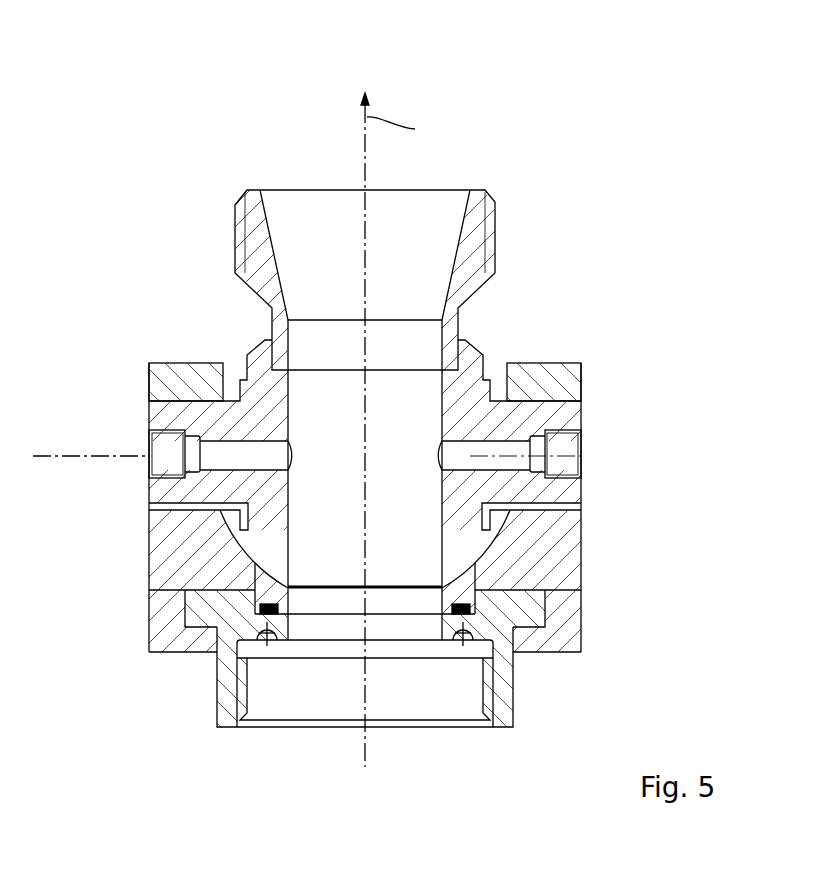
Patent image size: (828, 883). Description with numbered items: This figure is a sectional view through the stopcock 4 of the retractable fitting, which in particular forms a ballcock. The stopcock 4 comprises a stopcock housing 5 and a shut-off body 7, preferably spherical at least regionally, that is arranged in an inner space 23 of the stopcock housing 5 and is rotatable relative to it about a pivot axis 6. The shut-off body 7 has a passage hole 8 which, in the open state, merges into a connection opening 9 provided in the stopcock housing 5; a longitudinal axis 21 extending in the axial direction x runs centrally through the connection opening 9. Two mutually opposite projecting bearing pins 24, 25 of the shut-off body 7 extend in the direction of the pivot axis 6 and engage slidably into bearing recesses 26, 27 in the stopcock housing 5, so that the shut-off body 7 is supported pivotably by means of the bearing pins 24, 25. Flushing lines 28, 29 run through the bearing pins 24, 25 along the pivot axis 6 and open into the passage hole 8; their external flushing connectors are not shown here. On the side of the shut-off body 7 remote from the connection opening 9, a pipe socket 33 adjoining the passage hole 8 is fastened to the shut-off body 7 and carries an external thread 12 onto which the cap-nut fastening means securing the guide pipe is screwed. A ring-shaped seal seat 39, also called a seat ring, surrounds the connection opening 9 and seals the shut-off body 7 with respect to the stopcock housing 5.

The stopcock 4 is at (203, 105).
The stopcock housing 5 is at (568, 577).
The pivot axis 6 is at (78, 453).
The shut-off body 7 is at (477, 360).
The passage hole 8 is at (400, 568).
The connection opening 9 is at (325, 608).
The external thread 12 is at (492, 232).
The longitudinal axis 21 is at (362, 172).
The inner space 23 is at (242, 535).
The bearing pin 24 is at (157, 488).
The bearing pin 25 is at (568, 493).
The bearing recess 26 is at (167, 517).
The bearing recess 27 is at (560, 515).
The flushing line 28 is at (218, 448).
The flushing line 29 is at (512, 447).
The pipe socket 33 is at (258, 230).
The seal seat 39 is at (462, 597).